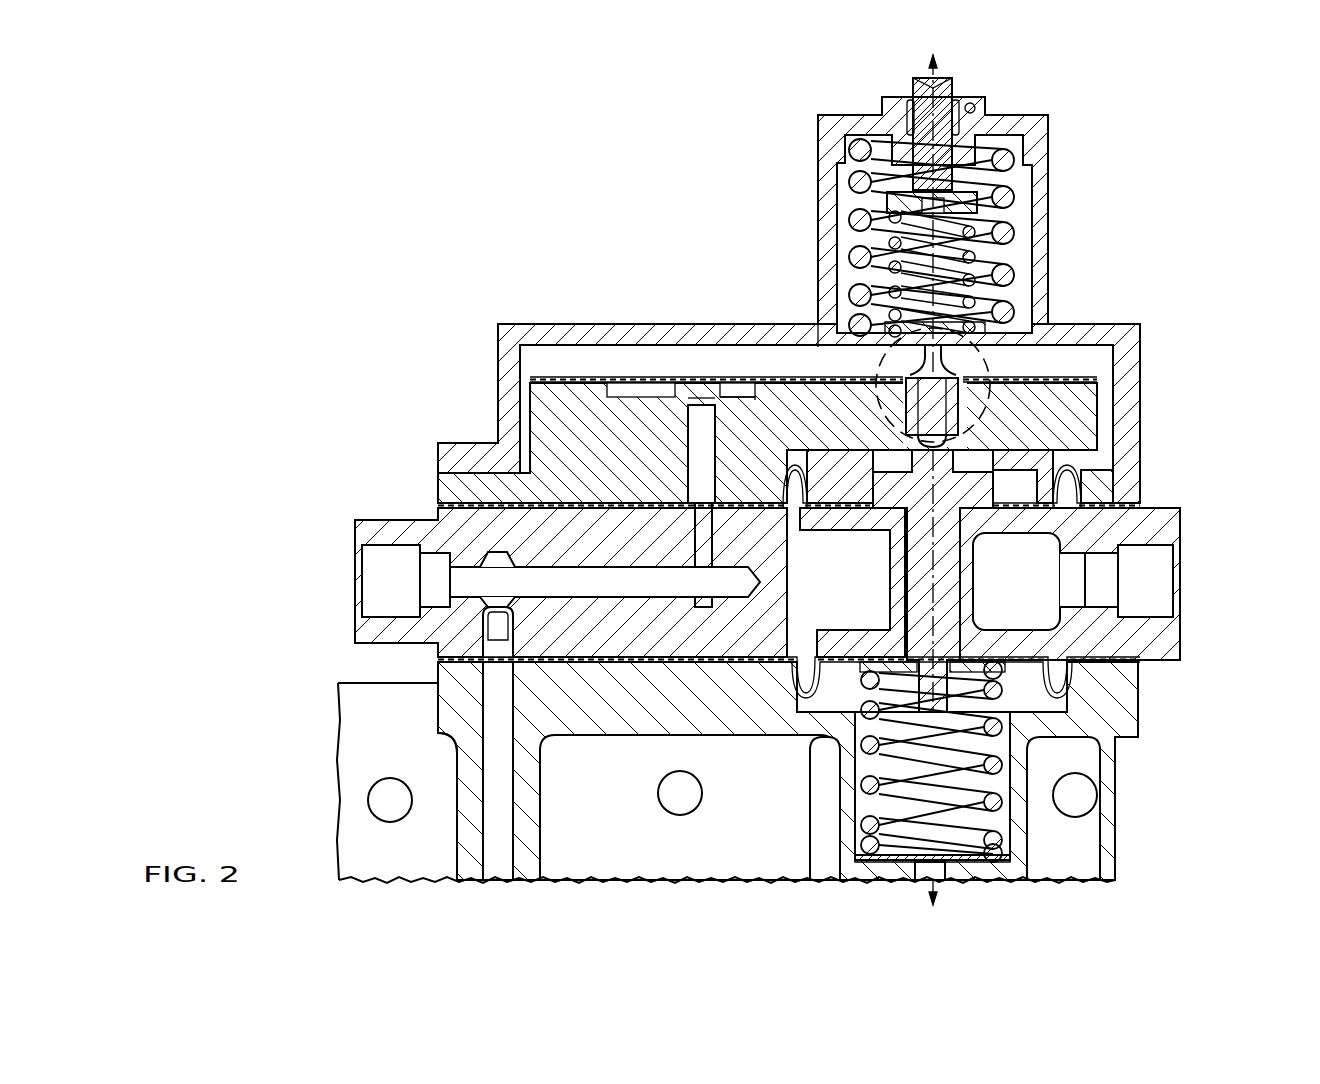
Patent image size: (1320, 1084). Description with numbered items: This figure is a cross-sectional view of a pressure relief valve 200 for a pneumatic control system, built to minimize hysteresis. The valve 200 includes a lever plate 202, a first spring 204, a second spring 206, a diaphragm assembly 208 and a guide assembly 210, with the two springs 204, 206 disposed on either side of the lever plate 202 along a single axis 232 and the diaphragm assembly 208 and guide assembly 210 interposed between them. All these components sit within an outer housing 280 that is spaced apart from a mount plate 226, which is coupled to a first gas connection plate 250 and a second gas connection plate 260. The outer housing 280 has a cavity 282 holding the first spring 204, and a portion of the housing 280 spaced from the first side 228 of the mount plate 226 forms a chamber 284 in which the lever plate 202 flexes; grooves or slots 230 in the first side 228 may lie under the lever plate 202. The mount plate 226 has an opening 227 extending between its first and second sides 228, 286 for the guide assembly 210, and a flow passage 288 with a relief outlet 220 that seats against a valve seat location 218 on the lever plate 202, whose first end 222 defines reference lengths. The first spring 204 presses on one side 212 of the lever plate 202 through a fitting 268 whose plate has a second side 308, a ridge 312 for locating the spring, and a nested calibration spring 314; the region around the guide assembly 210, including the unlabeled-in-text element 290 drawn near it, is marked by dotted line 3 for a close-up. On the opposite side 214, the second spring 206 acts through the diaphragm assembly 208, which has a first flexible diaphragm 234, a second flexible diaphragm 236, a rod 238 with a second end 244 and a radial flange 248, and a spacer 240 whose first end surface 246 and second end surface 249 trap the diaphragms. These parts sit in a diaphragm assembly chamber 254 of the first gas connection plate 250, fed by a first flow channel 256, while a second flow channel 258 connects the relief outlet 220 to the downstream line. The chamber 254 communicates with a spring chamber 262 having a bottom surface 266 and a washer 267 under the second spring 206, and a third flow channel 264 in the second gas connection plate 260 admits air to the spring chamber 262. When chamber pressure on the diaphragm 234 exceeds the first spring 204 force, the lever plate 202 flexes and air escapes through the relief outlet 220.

The pressure relief valve 200 is at (1158, 183).
The lever plate 202 is at (715, 365).
The first spring 204 is at (850, 150).
The second spring 206 is at (1097, 795).
The diaphragm assembly 208 is at (1062, 548).
The guide assembly 210 is at (1035, 332).
The first side of lever plate 212 is at (790, 380).
The second side of lever plate 214 is at (748, 398).
The valve seat location 218 is at (690, 400).
The relief outlet 220 is at (690, 380).
The first end of lever plate 222 is at (522, 400).
The mount plate 226 is at (540, 428).
The opening 227 is at (970, 425).
The first side of mount plate 228 is at (555, 368).
The grooves or slots 230 is at (620, 385).
The axis 232 is at (915, 108).
The first flexible diaphragm 234 is at (1067, 465).
The second flexible diaphragm 236 is at (1070, 690).
The rod 238 is at (1043, 586).
The spacer 240 is at (1030, 525).
The second end of rod 244 is at (960, 720).
The first end surface of spacer 246 is at (1075, 495).
The radial flange 248 is at (825, 508).
The second end surface of spacer 249 is at (842, 662).
The first gas connection plate 250 is at (460, 522).
The diaphragm assembly chamber 254 is at (1090, 590).
The first flow channel 256 is at (1160, 565).
The second flow channel 258 is at (572, 595).
The second gas connection plate 260 is at (375, 752).
The spring chamber 262 is at (1005, 832).
The third flow channel 264 is at (615, 755).
The bottom surface 266 is at (1005, 860).
The washer 267 is at (885, 865).
The fitting 268 is at (1030, 333).
The outer housing 280 is at (745, 340).
The cavity 282 is at (845, 195).
The chamber 284 is at (652, 355).
The second side of mount plate 286 is at (602, 508).
The flow passage 288 is at (690, 458).
The nut 290 is at (958, 403).
The second side of plate 308 is at (880, 340).
The ridge 312 is at (880, 320).
The calibration spring 314 is at (975, 232).
The dotted line 3- 3 is at (998, 356).